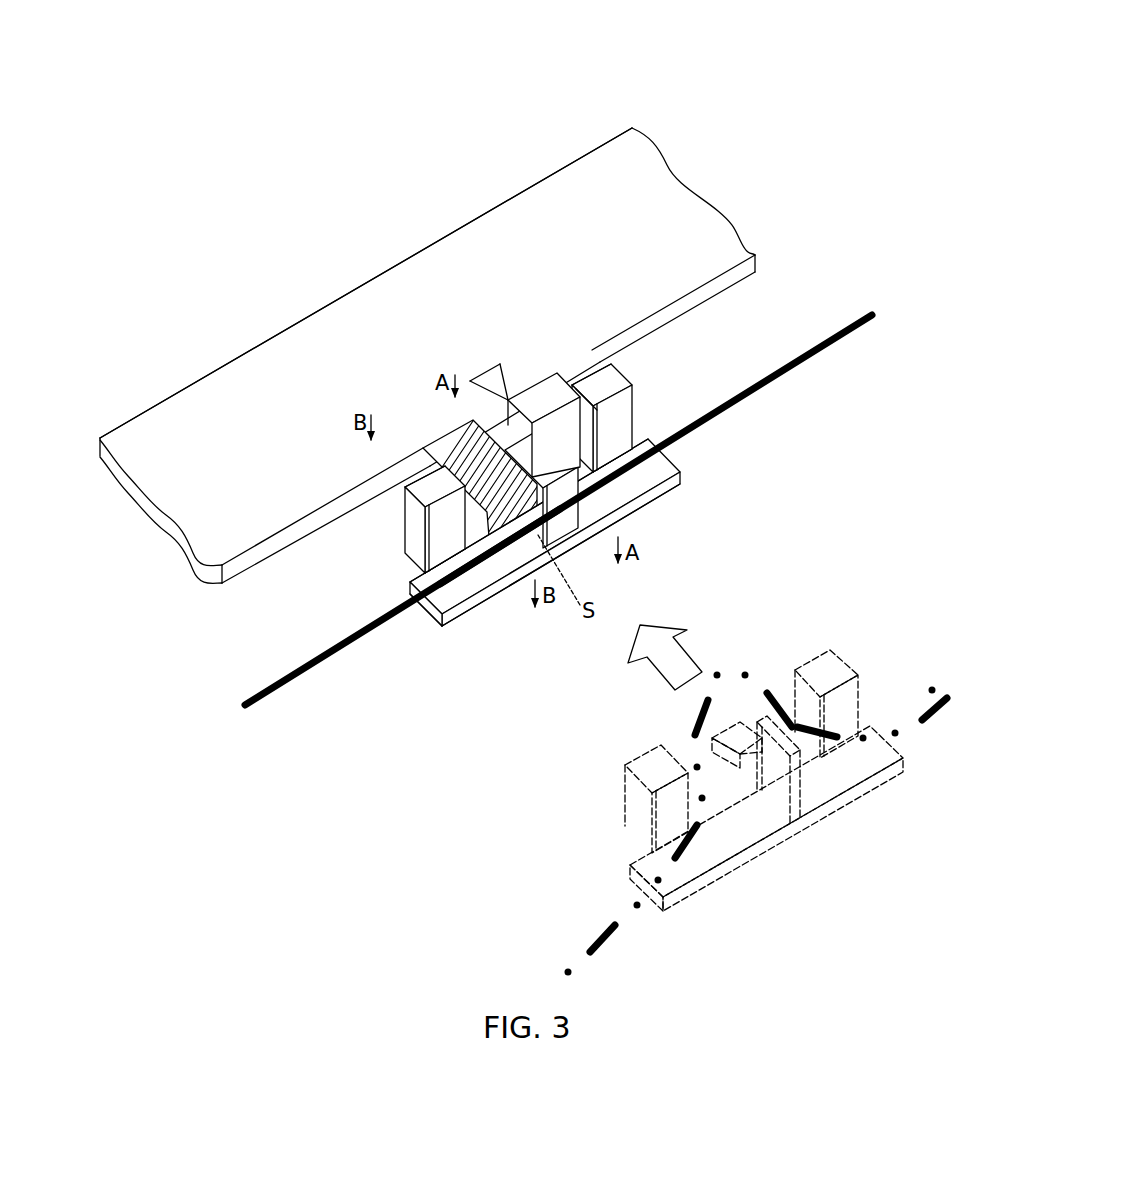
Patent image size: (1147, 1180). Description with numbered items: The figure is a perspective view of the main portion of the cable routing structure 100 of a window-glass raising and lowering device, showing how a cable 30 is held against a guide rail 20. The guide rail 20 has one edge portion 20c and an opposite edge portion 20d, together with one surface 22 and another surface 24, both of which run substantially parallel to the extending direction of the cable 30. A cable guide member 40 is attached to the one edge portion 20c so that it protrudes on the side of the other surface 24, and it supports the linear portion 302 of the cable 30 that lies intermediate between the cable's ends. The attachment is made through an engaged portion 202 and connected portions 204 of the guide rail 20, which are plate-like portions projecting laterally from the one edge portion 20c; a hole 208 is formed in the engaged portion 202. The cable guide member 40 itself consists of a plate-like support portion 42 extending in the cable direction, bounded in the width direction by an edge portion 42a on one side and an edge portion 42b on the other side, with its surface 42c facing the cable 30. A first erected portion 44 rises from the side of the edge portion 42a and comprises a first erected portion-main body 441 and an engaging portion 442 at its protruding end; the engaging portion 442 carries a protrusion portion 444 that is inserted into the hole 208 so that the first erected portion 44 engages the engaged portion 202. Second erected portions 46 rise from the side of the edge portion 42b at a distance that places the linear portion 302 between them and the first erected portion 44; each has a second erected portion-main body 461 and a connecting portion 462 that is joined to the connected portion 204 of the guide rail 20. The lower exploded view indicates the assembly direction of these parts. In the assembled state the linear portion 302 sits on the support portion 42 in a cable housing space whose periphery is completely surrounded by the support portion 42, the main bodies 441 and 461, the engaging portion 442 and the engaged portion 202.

The fixing structure 100 is at (370, 95).
The guide rail 20 is at (594, 168).
The one surface 22 is at (415, 285).
The one edge portion 20c is at (302, 545).
The another edge portion 20d is at (315, 305).
The another surface 24 is at (745, 282).
The engaged portion 202 is at (470, 420).
The connected portion 204 is at (555, 372).
The hole 208 is at (517, 438).
The cable 30 is at (777, 383).
The linear portion 302 is at (507, 583).
The cable guide member 40 is at (604, 560).
The support portion 42 is at (663, 468).
The edge portion on one side 42a is at (462, 612).
The edge portion on another side 42b is at (412, 578).
The surface 42c is at (493, 590).
The first erected portion 44 is at (686, 581).
The first erected portion-main body 441 is at (561, 461).
The engaging portion 442 is at (520, 412).
The protrusion portion 444 is at (733, 720).
The second erected portion 46 is at (640, 401).
The second erected portion-main body 461 is at (620, 428).
The connecting portion 462 is at (588, 375).